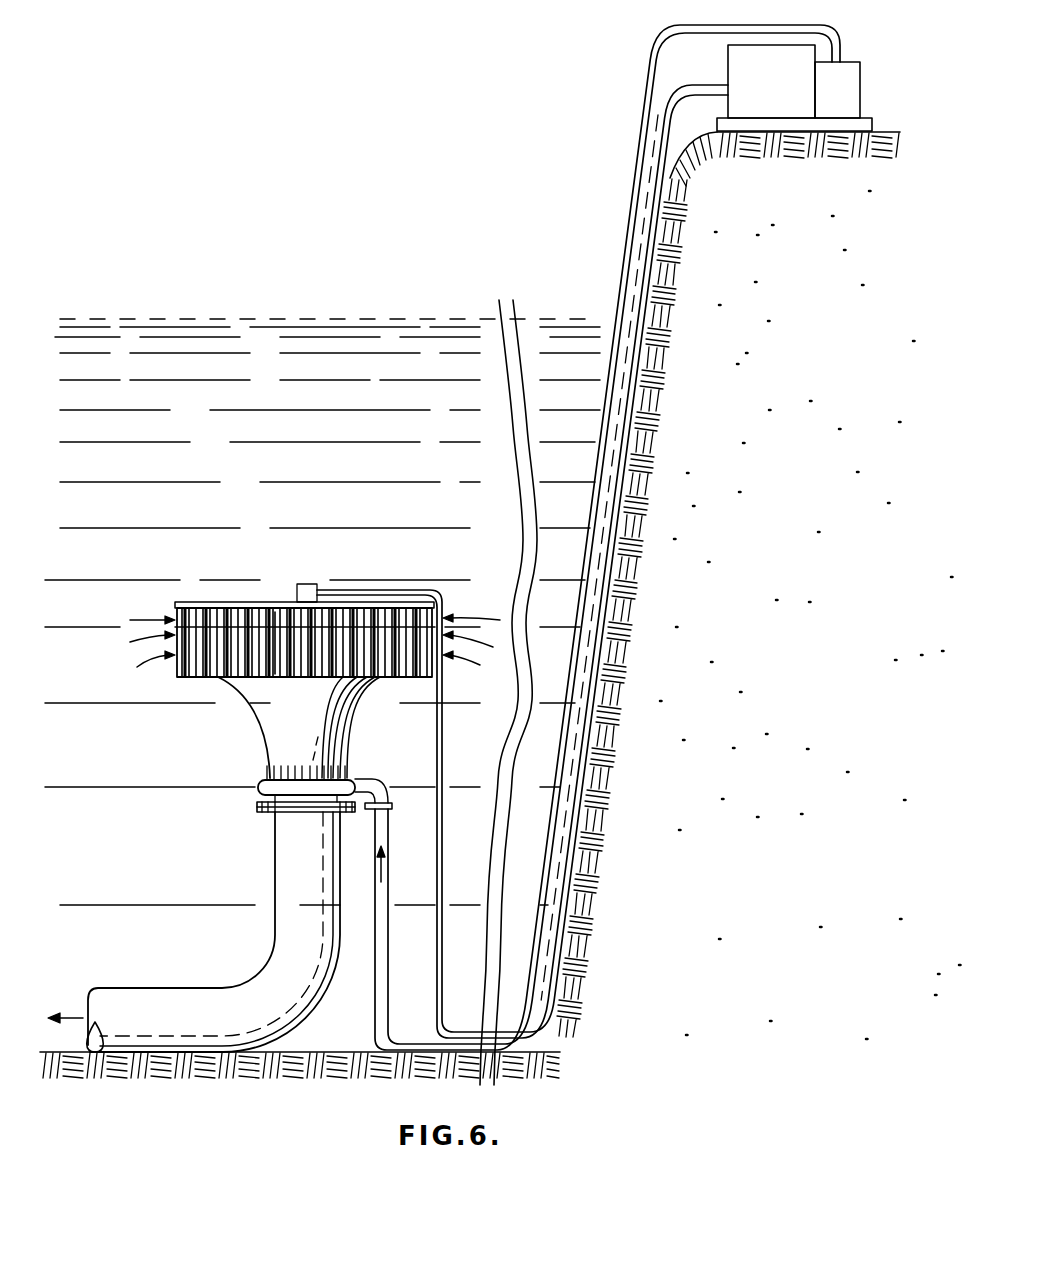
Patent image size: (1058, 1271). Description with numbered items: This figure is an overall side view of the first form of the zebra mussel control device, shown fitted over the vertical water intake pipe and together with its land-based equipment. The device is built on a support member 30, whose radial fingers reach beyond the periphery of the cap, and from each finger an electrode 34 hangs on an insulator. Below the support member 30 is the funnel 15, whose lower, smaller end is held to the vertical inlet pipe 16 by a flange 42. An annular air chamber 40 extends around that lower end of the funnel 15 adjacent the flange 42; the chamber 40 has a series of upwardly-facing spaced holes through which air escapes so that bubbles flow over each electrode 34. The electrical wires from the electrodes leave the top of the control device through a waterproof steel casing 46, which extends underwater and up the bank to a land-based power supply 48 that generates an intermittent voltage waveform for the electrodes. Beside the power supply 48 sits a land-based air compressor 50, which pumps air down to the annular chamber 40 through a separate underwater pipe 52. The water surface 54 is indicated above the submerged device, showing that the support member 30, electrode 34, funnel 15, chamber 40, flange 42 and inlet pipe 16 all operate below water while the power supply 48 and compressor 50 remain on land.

The funnel 15 is at (273, 710).
The vertical inlet pipe 16 is at (280, 840).
The support member 30 is at (190, 602).
The electrode 34 is at (275, 609).
The annular air chamber 40 is at (258, 780).
The flange 42 is at (258, 805).
The waterproof steel casing 46 is at (340, 590).
The power supply 48 is at (852, 114).
The air compressor 50 is at (793, 97).
The underwater pipe 52 is at (600, 567).
The water surface 54 is at (336, 320).